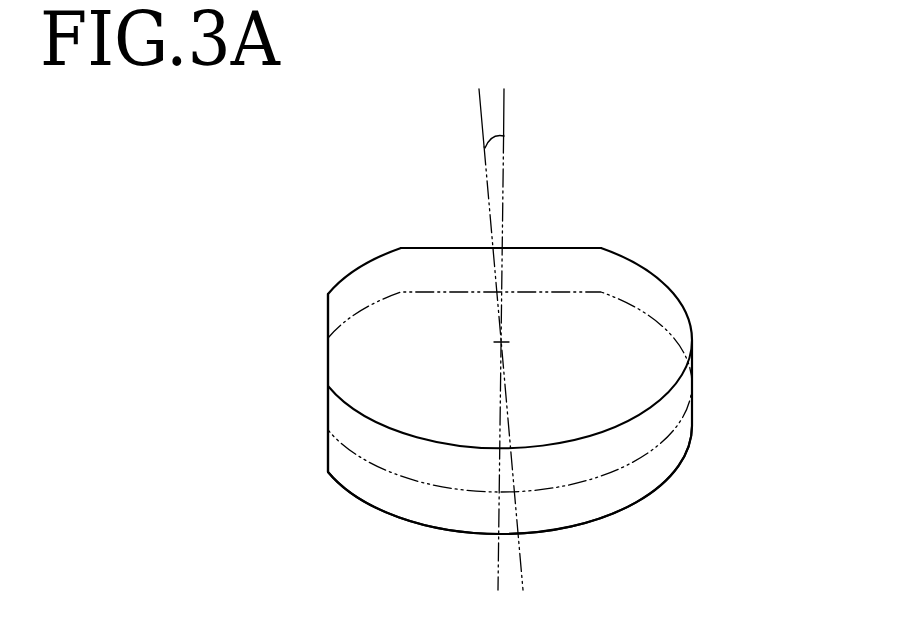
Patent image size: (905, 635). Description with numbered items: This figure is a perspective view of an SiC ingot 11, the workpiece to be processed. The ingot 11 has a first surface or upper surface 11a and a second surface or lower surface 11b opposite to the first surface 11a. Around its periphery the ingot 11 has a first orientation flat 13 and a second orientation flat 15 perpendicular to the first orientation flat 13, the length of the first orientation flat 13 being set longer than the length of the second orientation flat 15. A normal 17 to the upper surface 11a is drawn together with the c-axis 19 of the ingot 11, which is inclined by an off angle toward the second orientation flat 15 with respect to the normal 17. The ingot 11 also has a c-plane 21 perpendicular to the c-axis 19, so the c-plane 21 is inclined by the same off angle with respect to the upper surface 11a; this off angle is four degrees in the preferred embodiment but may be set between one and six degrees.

The SiC ingot 11 is at (670, 282).
The first surface 11a is at (657, 368).
The second surface 11b is at (600, 522).
The first orientation flat 13 is at (566, 249).
The second orientation flat 15 is at (328, 355).
The normal 17 is at (505, 108).
The c-axis 19 is at (480, 108).
The c-plane 21 is at (400, 474).